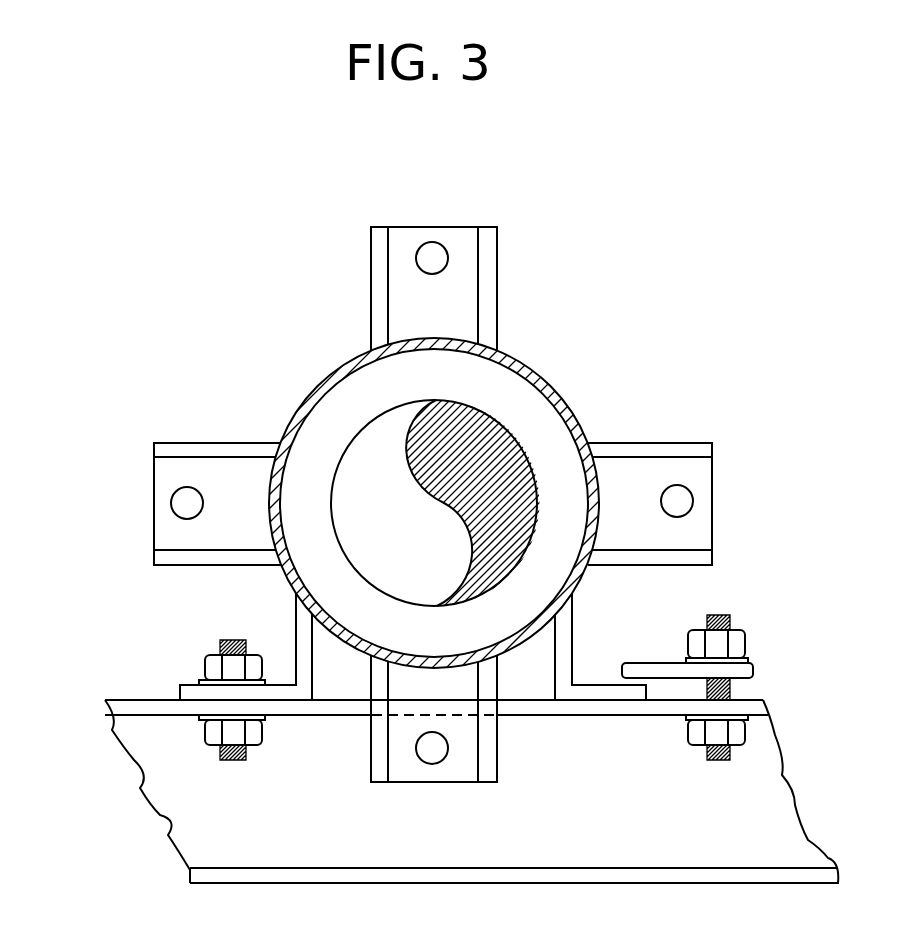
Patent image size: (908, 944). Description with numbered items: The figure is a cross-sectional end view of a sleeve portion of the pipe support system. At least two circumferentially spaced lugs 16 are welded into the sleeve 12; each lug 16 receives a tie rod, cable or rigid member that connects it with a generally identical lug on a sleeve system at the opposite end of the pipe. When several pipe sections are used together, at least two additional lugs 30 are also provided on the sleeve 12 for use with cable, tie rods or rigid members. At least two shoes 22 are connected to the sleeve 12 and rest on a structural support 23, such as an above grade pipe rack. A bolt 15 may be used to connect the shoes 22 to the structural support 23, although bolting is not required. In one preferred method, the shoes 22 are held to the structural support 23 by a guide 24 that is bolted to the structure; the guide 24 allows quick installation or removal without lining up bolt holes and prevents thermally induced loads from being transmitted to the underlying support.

The sleeve 12 is at (580, 396).
The additional lugs 30 is at (506, 260).
The lugs 16 is at (128, 490).
The shoes 22 is at (275, 612).
The structural support 23 is at (802, 753).
The guide 24 is at (765, 669).
The bolt 15 is at (756, 644).